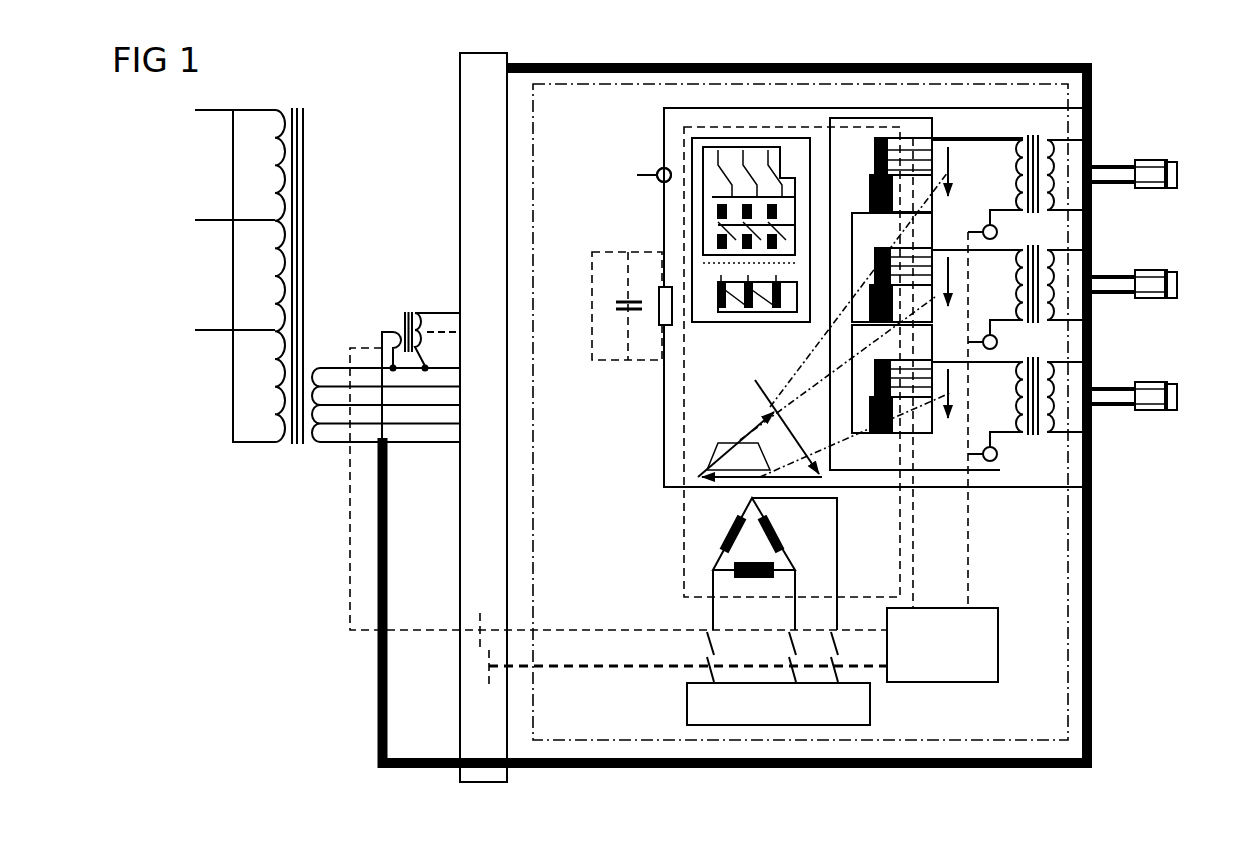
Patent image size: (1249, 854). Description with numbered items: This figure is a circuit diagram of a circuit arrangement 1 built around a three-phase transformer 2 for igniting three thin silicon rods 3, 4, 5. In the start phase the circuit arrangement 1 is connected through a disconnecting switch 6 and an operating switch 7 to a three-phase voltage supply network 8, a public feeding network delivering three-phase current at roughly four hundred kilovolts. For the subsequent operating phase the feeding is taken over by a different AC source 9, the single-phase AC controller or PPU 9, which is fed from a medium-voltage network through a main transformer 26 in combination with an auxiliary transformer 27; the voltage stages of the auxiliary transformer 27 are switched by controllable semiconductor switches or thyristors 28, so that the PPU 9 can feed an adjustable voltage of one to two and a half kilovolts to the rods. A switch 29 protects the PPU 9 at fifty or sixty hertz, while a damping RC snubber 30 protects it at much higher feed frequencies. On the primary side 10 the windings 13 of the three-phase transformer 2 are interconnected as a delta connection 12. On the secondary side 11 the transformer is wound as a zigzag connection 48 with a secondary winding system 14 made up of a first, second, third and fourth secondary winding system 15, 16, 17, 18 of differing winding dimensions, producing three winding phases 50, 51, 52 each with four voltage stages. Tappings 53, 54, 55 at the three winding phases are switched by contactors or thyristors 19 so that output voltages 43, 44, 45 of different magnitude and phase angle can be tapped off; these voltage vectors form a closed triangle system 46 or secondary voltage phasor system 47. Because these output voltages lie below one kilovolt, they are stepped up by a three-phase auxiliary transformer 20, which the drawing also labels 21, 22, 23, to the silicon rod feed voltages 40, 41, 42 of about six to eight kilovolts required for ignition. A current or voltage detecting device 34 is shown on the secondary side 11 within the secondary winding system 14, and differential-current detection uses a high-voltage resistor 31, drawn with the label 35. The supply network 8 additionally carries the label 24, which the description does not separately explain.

The circuit arrangement 1 is at (1115, 82).
The three-phase transformer 2 is at (578, 105).
The thin silicon rod 3 is at (1166, 157).
The thin silicon rod 4 is at (1166, 267).
The thin silicon rod 5 is at (1166, 379).
The disconnecting switch 6 is at (703, 667).
The operating switch 7 is at (703, 640).
The three-phase voltage supply network 8 is at (834, 704).
The single-phase AC controller (PPU) 9 is at (458, 103).
The primary side 10 is at (713, 564).
The secondary side 11 is at (702, 432).
The delta winding/connection 12 is at (685, 549).
The primary winding 13 is at (716, 558).
The secondary winding system 14 is at (741, 173).
The first secondary winding system 15 is at (703, 208).
The second secondary winding system 16 is at (703, 193).
The third secondary winding system 17 is at (706, 163).
The fourth secondary winding system 18 is at (703, 242).
The electrical switch/contactor or thyristor 19 is at (937, 133).
The three-phase auxiliary transformer 20 is at (1072, 282).
The transformer 21 is at (1045, 128).
The transformer 22 is at (1045, 238).
The transformer 23 is at (1045, 350).
The control device 24 is at (870, 708).
The main transformer 26 is at (284, 105).
The auxiliary transformer 27 is at (382, 328).
The controllable semiconductor switches/thyristors 28 is at (459, 305).
The switch 29 is at (607, 333).
The damping RC snubber 30 is at (585, 342).
The high-voltage resistor 31 is at (620, 103).
The current/voltage detecting device 34 is at (662, 166).
The connection point 35 is at (656, 160).
The thin silicon rod feed voltage 40 is at (1174, 155).
The thin silicon rod feed voltage 41 is at (1174, 265).
The thin silicon rod feed voltage 42 is at (1174, 377).
The tapping/output voltage 43 is at (958, 160).
The tapping/output voltage 44 is at (958, 270).
The tapping/output voltage 45 is at (958, 380).
The closed triangle system 46 is at (702, 428).
The secondary voltage phasor system 47 is at (702, 428).
The zigzag connection/winding 48 is at (786, 167).
The first winding phase 50 is at (669, 229).
The second winding phase 51 is at (669, 229).
The third winding phase 52 is at (669, 229).
The tappings 53 is at (895, 140).
The tappings 54 is at (891, 247).
The tappings 55 is at (891, 359).